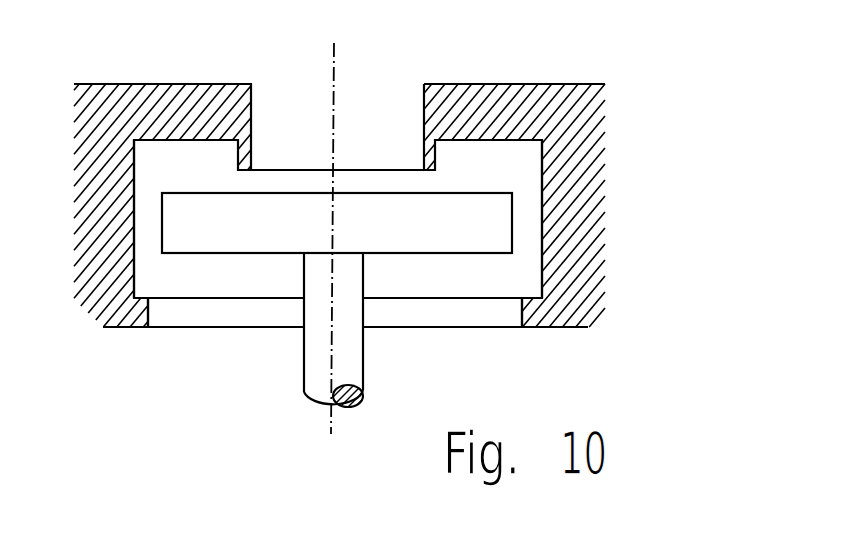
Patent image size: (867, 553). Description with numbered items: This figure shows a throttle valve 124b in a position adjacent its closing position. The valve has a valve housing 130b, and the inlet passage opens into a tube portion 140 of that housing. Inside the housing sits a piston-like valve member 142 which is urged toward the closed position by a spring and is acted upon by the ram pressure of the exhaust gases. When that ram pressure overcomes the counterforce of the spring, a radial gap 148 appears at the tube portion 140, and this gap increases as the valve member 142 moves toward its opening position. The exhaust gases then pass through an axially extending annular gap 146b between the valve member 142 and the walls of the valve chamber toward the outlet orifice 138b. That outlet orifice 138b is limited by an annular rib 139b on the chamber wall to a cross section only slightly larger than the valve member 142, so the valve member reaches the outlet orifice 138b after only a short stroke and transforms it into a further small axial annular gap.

The throttle valve 124b is at (587, 73).
The valve housing 130b is at (167, 85).
The axially extending annular gap 146b is at (528, 218).
The radial gap 148 is at (242, 180).
The tube portion 140 is at (435, 167).
The valve member 142 is at (265, 255).
The annular rib 139b is at (468, 294).
The outlet orifice 138b is at (470, 320).